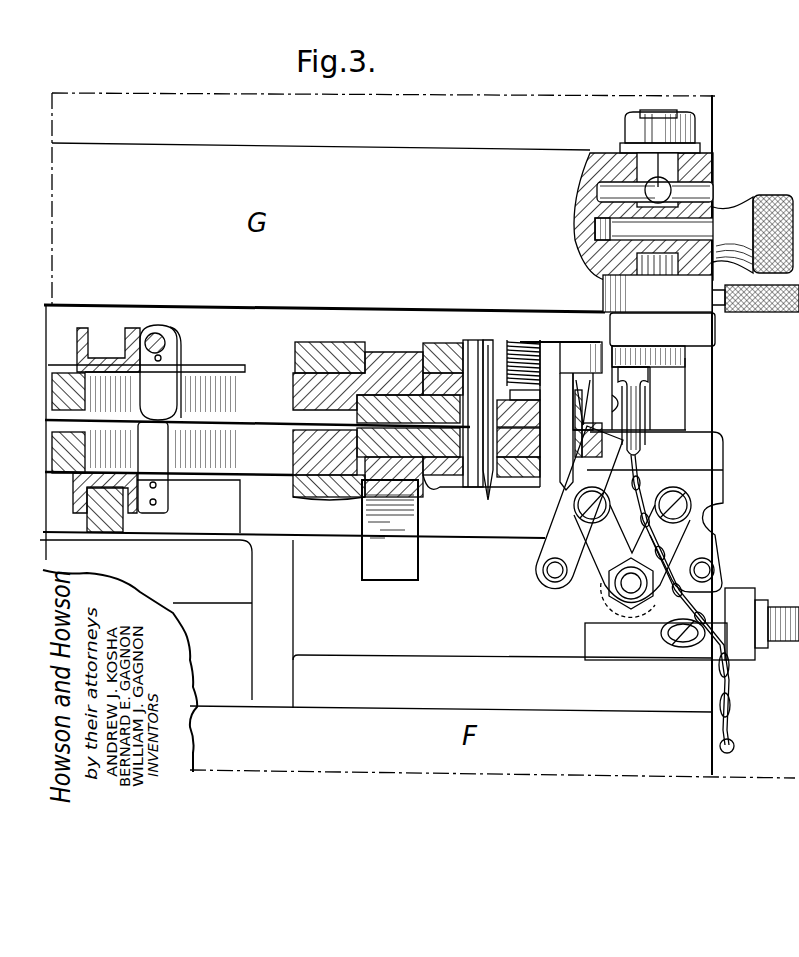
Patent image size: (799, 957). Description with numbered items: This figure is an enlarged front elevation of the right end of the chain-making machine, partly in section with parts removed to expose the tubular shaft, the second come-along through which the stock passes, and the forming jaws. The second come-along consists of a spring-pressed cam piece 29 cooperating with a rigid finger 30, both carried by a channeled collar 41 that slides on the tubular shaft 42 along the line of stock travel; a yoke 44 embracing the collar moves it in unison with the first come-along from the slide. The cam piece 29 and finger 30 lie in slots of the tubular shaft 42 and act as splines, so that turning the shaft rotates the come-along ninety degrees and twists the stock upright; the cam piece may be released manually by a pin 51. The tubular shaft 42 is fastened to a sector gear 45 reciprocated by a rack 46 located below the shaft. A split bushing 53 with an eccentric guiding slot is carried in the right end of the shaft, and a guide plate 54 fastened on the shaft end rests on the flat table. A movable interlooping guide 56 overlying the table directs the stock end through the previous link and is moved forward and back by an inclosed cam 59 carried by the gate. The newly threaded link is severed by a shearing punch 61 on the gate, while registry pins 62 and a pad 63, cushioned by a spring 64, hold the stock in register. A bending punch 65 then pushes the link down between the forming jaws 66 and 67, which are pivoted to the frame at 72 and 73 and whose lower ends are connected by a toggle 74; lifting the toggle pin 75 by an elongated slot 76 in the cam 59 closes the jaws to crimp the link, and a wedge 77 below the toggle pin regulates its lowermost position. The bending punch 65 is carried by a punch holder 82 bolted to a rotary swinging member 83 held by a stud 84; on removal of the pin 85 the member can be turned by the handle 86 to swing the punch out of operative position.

The cam piece 29 is at (170, 396).
The rigid finger 30 is at (152, 450).
The channeled collar 41 is at (90, 348).
The tubular shaft 42 is at (66, 380).
The yoke 44 is at (107, 520).
The sector gear 45 is at (389, 360).
The rack 46 is at (390, 568).
The pin 51 is at (160, 357).
The split bushing 53 is at (428, 445).
The guide plate 54 is at (478, 348).
The interlooping guide 56 is at (640, 400).
The inclosed cam 59 is at (672, 368).
The shearing punch 61 is at (575, 365).
The registry pins 62 is at (516, 470).
The pad 63 is at (510, 340).
The spring 64 is at (535, 345).
The bending punch 65 is at (606, 420).
The forming jaw 66 is at (545, 545).
The forming jaw 67 is at (700, 462).
The pivot 72 is at (574, 500).
The pivot 73 is at (690, 513).
The toggle 74 is at (605, 605).
The toggle pin 75 is at (590, 590).
The elongated slot 76 is at (791, 488).
The wedge 77 is at (742, 600).
The punch holder 82 is at (690, 338).
The rotary swinging member 83 is at (657, 293).
The stud 84 is at (705, 160).
The pin 85 is at (748, 215).
The handle 86 is at (780, 300).